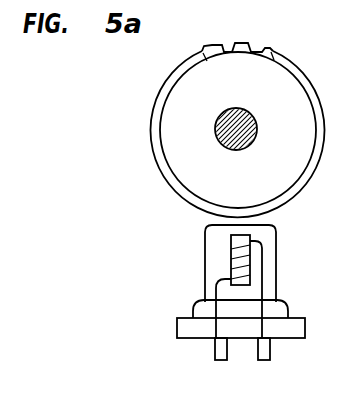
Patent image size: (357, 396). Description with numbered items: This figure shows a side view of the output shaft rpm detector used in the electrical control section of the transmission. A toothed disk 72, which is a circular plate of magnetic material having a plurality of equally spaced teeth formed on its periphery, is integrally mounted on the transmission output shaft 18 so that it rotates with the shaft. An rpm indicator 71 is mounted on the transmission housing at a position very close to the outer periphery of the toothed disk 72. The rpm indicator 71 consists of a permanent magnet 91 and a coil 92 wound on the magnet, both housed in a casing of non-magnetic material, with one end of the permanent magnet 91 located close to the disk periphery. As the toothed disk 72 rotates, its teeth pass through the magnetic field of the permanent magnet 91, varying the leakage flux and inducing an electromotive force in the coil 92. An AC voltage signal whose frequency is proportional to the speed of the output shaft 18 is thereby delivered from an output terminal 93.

The toothed disk 72 is at (274, 58).
The transmission output shaft 18 is at (250, 118).
The rpm indicator 71 is at (177, 328).
The coil 92 is at (231, 262).
The permanent magnet 91 is at (244, 284).
The output terminal 93 is at (215, 347).